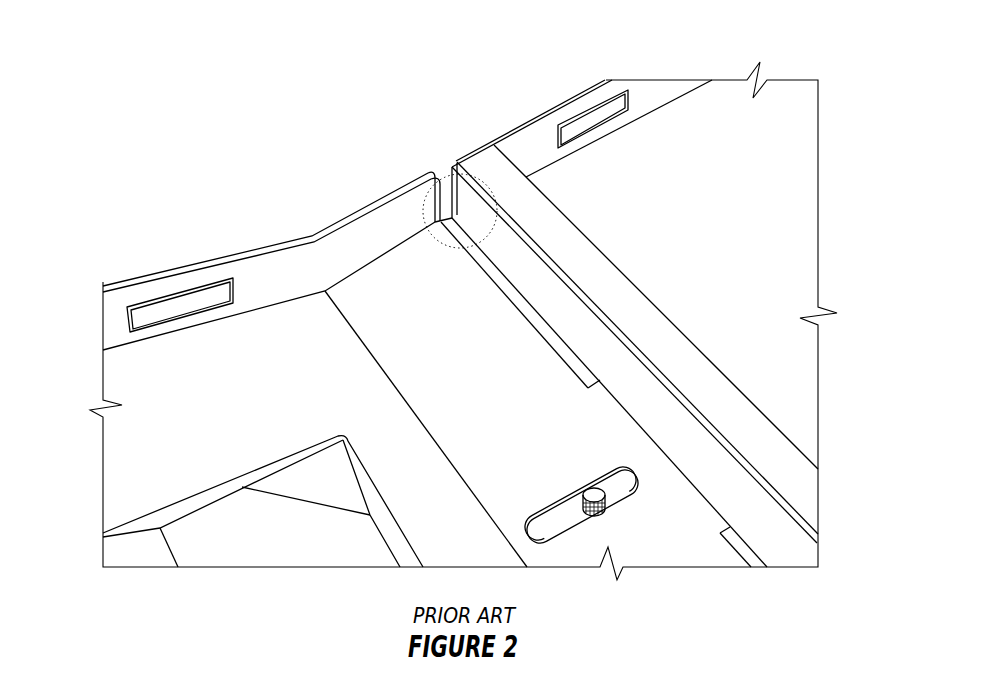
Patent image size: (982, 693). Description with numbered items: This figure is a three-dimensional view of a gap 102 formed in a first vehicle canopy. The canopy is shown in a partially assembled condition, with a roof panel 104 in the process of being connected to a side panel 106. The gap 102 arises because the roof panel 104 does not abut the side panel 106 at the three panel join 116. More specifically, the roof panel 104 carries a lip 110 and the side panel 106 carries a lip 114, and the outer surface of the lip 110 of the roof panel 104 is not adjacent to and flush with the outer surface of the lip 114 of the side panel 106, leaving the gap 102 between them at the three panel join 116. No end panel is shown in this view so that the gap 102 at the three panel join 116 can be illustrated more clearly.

The gap 102 is at (476, 178).
The roof panel 104 is at (699, 230).
The side panel 106 is at (188, 385).
The lip of the roof panel 110 is at (647, 91).
The lip of the side panel 114 is at (217, 240).
The three panel join 116 is at (441, 164).